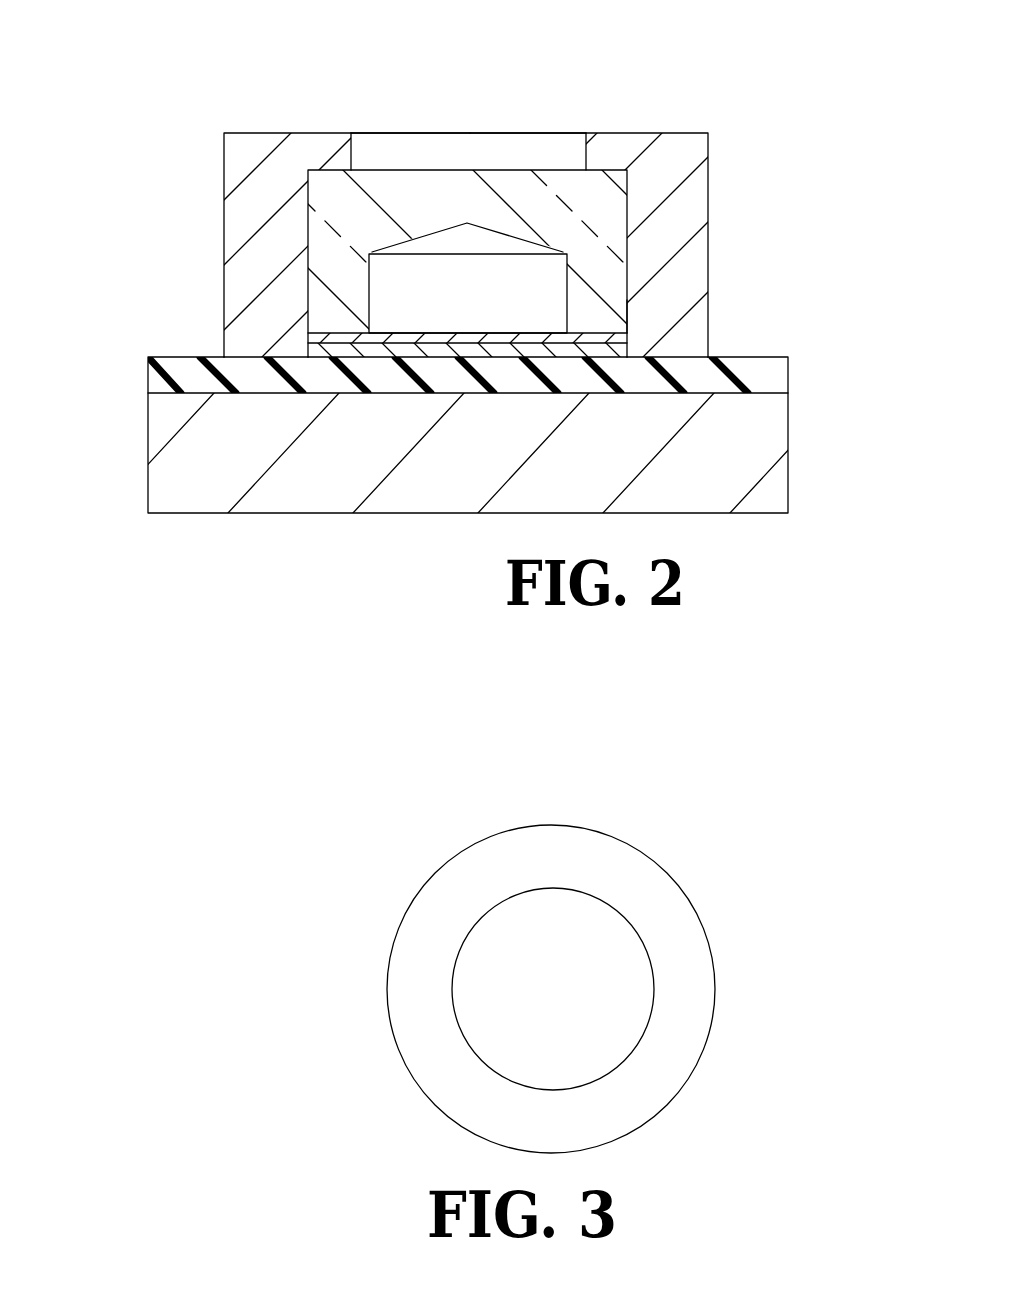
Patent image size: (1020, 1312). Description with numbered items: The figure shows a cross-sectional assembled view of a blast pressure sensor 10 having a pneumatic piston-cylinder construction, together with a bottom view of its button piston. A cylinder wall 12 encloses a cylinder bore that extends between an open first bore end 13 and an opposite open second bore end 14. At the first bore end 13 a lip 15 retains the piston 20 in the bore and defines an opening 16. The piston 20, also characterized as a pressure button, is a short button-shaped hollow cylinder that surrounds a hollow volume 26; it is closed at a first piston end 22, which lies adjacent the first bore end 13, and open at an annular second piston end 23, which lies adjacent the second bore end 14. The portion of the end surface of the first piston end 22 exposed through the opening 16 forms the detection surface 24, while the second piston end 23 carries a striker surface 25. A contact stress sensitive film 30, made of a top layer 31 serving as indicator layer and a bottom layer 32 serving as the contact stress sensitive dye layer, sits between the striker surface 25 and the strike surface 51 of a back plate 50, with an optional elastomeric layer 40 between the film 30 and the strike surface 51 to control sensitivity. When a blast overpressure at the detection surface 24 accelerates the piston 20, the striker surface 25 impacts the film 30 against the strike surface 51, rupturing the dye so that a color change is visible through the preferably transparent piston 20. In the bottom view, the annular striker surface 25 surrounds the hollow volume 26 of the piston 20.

In FIG. 2, the blast pressure sensor 10 is at (722, 60).
In FIG. 2, the cylinder wall 12 is at (708, 242).
In FIG. 2, the first bore end 13 is at (642, 134).
In FIG. 2, the second bore end 14 is at (686, 347).
In FIG. 2, the lip 15 is at (571, 136).
In FIG. 2, the opening 16 is at (457, 135).
In FIG. 2, the piston 20 is at (328, 243).
In FIG. 3, the piston 20 is at (683, 1092).
In FIG. 2, the first piston end 22 is at (597, 188).
In FIG. 2, the second piston end 23 is at (598, 322).
In FIG. 2, the detection surface 24 is at (394, 134).
In FIG. 2, the striker surface 25 is at (620, 358).
In FIG. 3, the striker surface 25 is at (497, 872).
In FIG. 2, the hollow volume 26 is at (493, 310).
In FIG. 3, the hollow volume 26 is at (585, 1018).
In FIG. 2, the contact stress sensitive film 30 is at (150, 243).
In FIG. 2, the top layer 31 is at (307, 337).
In FIG. 2, the bottom layer 32 is at (307, 348).
In FIG. 2, the elastomeric layer 40 is at (148, 382).
In FIG. 2, the back plate 50 is at (788, 437).
In FIG. 2, the strike surface 51 is at (763, 380).